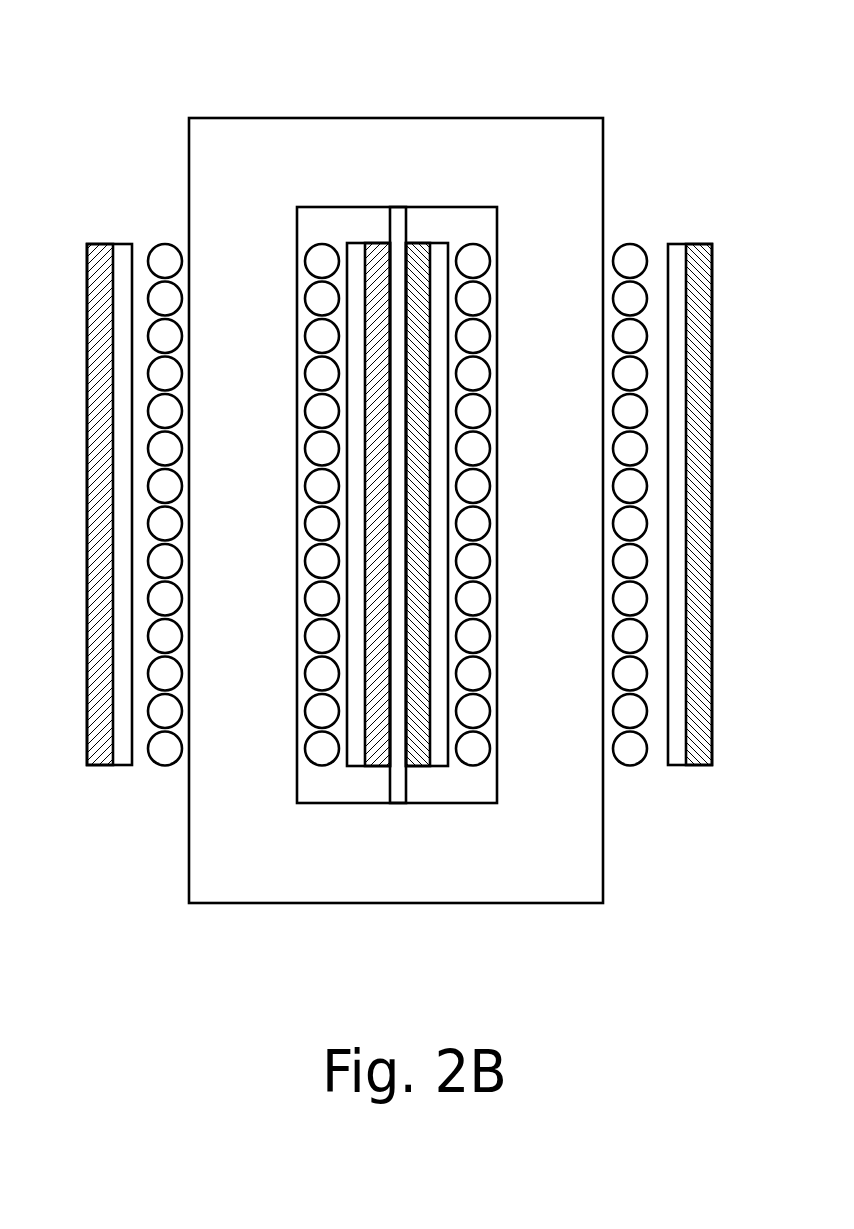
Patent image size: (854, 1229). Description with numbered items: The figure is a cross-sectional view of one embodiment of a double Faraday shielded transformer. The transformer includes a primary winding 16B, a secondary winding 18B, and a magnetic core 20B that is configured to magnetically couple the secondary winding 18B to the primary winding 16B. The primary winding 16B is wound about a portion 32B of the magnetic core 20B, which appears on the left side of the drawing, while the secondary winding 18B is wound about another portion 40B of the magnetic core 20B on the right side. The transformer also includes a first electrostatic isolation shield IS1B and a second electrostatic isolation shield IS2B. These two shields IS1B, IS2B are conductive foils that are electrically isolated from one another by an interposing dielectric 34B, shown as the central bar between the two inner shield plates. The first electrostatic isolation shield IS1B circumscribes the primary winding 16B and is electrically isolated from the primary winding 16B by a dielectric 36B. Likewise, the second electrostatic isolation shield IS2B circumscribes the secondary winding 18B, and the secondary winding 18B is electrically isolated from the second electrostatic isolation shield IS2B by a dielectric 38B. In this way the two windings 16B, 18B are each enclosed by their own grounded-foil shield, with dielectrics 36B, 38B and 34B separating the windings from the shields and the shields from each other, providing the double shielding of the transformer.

The magnetic core 20B is at (502, 118).
The interposing dielectric 34B is at (400, 207).
The portion of magnetic core 32B is at (270, 542).
The portion of magnetic core 40B is at (573, 542).
The primary winding 16B is at (322, 793).
The secondary winding 18B is at (476, 793).
The dielectric 36B is at (222, 528).
The dielectric 38B is at (574, 532).
The first electrostatic isolation shield IS1B is at (115, 416).
The second electrostatic isolation shield IS2B is at (680, 418).